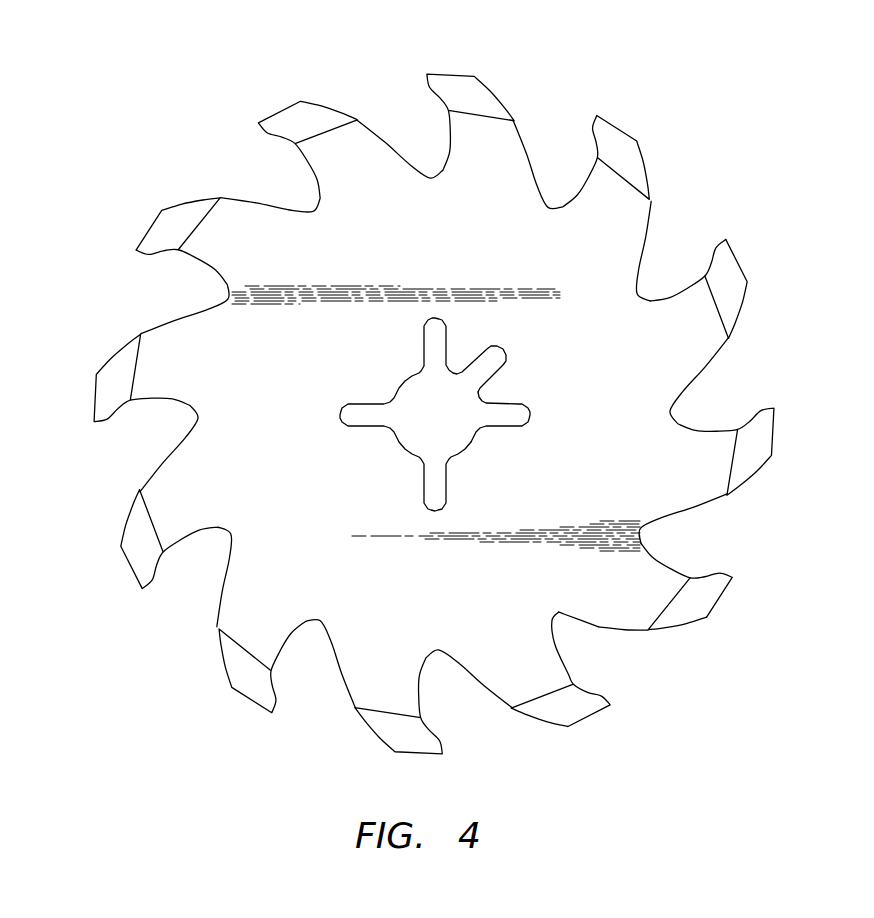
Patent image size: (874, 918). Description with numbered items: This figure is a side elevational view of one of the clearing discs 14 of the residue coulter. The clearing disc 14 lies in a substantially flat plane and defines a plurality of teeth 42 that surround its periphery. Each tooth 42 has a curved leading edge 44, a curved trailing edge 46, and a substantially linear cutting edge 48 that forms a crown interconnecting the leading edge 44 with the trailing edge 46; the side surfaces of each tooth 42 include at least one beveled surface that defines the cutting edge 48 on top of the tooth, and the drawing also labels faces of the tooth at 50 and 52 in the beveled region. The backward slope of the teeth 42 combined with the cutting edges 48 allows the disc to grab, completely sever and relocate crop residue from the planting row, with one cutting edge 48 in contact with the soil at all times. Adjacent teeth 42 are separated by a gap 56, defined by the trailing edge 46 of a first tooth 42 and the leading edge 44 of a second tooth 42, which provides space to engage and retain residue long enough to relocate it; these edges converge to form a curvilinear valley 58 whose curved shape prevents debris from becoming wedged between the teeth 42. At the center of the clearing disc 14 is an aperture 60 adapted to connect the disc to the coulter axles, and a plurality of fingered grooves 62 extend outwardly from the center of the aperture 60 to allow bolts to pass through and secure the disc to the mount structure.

The clearing disc 14 is at (743, 105).
The teeth 42 is at (700, 315).
The leading edge 44 is at (702, 313).
The trailing edge 46 is at (712, 508).
The cutting edge 48 is at (777, 430).
The relief face 50 is at (690, 598).
The land 52 is at (725, 598).
The gap 56 is at (600, 630).
The curvilinear valley 58 is at (597, 630).
The aperture 60 is at (410, 445).
The fingered grooves 62 is at (513, 427).